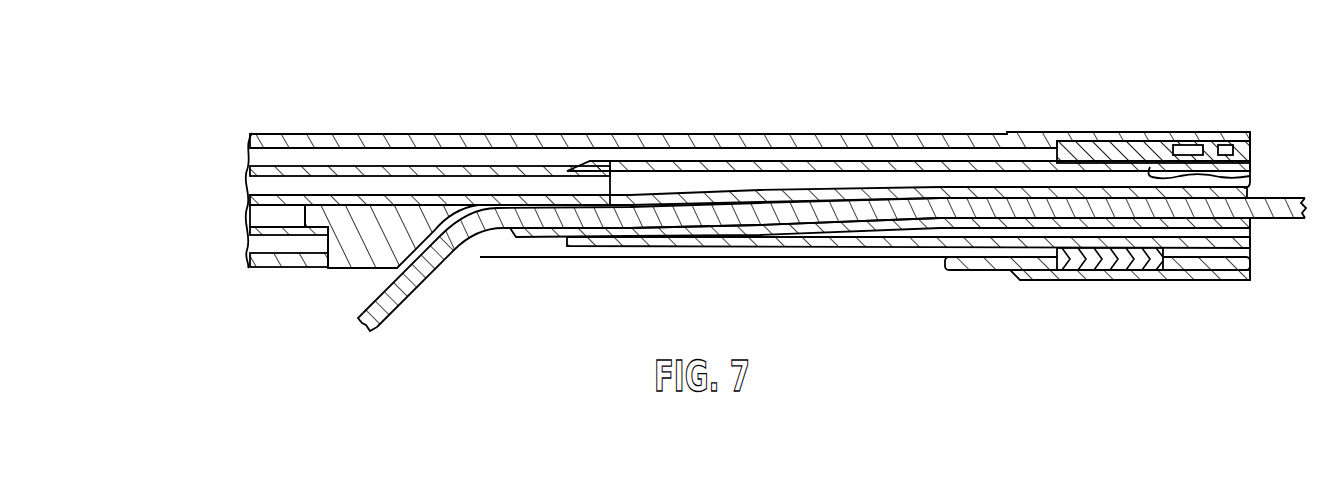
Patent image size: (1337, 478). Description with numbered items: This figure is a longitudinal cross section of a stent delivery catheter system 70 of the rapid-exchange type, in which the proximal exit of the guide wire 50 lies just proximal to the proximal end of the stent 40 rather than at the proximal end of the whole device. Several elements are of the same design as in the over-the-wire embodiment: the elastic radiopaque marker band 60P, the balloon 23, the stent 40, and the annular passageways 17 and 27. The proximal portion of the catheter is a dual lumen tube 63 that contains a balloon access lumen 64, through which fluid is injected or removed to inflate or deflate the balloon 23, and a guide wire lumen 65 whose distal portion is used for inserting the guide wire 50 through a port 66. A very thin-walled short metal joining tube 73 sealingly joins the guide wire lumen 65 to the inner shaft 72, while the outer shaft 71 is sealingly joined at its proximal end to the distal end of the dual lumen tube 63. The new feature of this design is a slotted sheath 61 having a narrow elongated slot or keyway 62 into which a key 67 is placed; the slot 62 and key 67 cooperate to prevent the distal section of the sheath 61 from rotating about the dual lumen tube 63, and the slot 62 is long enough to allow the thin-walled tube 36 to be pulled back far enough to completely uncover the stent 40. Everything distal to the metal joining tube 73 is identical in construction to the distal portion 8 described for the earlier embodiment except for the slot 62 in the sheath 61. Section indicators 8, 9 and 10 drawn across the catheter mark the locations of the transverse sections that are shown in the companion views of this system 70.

The distal portion 8 is at (263, 131).
The section line 9- 9 is at (348, 131).
The section line 10- 10 is at (902, 131).
The annular passageway 17 is at (1253, 175).
The balloon 23 is at (1213, 157).
The annular passageway 27 is at (267, 149).
The thin-walled tube 36 is at (1172, 138).
The stent 40 is at (1257, 264).
The guide wire 50 is at (395, 318).
The elastic radiopaque marker band 60P is at (1117, 270).
The slotted sheath 61 is at (247, 262).
The slot 62 is at (944, 258).
The dual lumen tube 63 is at (482, 176).
The balloon access lumen 64 is at (250, 192).
The guide wire lumen 65 is at (262, 222).
The port 66 is at (503, 230).
The key 67 is at (344, 257).
The stent delivery catheter system 70 is at (680, 107).
The outer shaft 71 is at (762, 161).
The inner shaft 72 is at (773, 237).
The metal joining tube 73 is at (578, 237).